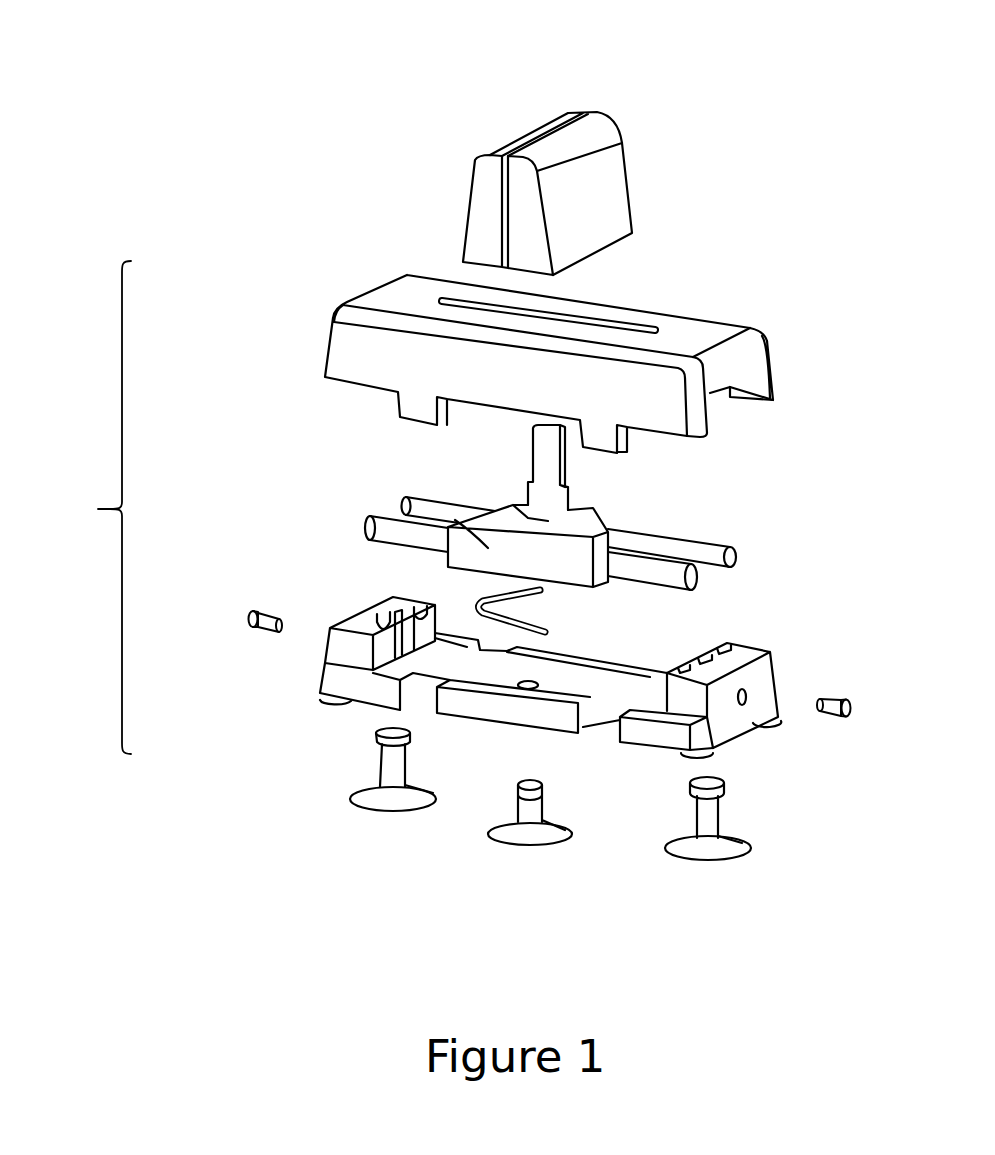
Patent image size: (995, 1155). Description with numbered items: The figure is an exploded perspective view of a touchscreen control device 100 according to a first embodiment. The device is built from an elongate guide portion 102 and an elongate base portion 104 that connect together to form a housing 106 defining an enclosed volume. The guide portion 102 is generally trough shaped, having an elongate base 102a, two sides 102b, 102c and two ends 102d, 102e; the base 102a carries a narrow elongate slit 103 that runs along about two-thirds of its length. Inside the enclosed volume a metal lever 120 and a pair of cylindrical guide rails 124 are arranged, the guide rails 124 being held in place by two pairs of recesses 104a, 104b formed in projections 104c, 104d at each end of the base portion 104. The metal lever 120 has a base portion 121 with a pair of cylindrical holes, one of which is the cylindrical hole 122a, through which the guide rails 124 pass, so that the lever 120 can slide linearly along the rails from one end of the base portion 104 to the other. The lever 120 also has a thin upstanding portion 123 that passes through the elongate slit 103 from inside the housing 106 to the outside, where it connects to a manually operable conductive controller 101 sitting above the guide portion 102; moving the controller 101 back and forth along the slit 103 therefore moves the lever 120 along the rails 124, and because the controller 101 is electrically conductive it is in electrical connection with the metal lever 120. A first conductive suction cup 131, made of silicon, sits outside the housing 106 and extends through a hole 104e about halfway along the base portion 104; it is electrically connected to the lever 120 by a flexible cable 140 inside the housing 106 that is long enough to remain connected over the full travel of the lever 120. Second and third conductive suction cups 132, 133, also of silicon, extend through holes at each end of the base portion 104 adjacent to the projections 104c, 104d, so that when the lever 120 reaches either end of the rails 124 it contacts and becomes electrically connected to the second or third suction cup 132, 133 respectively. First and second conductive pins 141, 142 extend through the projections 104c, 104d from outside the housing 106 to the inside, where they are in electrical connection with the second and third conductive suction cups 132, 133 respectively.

The touchscreen control device 100 is at (833, 63).
The manually operable conductive controller 101 is at (607, 173).
The elongate guide portion 102 is at (778, 328).
The elongate base 102a is at (407, 295).
The side 102b is at (380, 355).
The side 102c is at (737, 402).
The end 102d is at (335, 322).
The end 102e is at (747, 363).
The elongate slit 103 is at (607, 322).
The elongate base portion 104 is at (766, 636).
The recesses 104a is at (380, 626).
The recesses 104b is at (722, 650).
The projection 104c is at (353, 647).
The projection 104d is at (762, 695).
The hole 104e is at (523, 690).
The housing 106 is at (98, 509).
The metal lever 120 is at (606, 502).
The base portion 121 is at (470, 513).
The cylindrical hole 122a is at (635, 530).
The thin upstanding portion 123 is at (538, 442).
The cylindrical guide rails 124 is at (703, 578).
The first conductive suction cup 131 is at (517, 800).
The second conductive suction cup 132 is at (377, 733).
The third conductive suction cup 133 is at (712, 815).
The flexible cable 140 is at (480, 600).
The first conductive pin 141 is at (250, 616).
The second conductive pin 142 is at (852, 705).